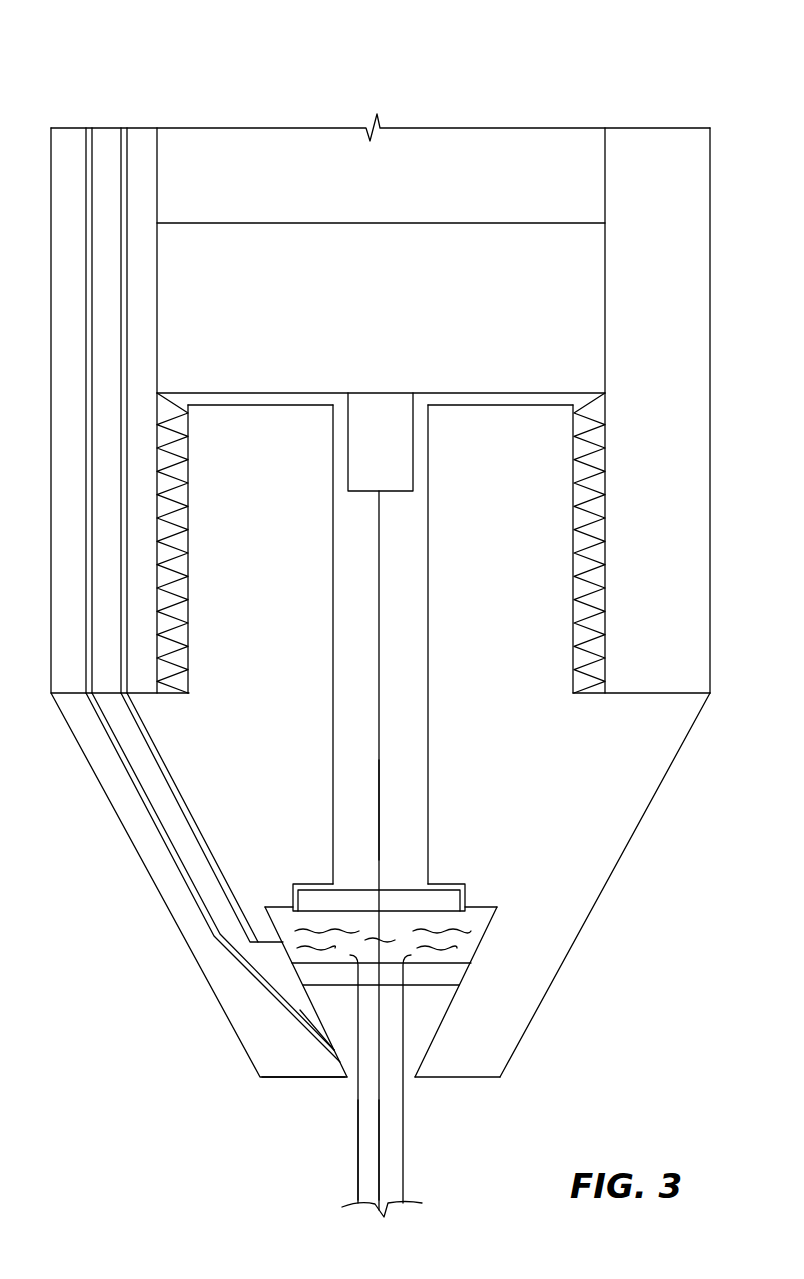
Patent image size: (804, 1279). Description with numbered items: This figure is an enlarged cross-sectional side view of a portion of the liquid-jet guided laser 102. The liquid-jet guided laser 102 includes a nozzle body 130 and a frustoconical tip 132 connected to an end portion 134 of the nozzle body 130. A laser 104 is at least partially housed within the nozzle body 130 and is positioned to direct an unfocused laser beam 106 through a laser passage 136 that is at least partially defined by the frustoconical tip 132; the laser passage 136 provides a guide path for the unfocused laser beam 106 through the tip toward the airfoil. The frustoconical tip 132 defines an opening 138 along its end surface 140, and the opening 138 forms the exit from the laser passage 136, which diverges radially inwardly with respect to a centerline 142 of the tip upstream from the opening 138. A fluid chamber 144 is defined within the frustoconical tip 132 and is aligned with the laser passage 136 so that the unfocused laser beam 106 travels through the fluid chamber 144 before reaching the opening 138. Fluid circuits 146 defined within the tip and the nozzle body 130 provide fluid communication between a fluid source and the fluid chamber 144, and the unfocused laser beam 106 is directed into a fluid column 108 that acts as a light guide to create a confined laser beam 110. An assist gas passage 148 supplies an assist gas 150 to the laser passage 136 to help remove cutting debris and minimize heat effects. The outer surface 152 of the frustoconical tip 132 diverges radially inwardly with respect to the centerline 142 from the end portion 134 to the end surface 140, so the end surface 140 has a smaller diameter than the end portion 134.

The liquid-jet guided laser 102 is at (648, 86).
The laser 104 is at (398, 325).
The unfocused laser beam 106 is at (379, 551).
The fluid column 108 is at (368, 1125).
The confined laser beam 110 is at (380, 1143).
The nozzle body 130 is at (693, 381).
The frustoconical tip 132 is at (632, 812).
The end portion 134 is at (686, 689).
The laser passage 136 is at (403, 654).
The opening 138 is at (414, 1080).
The end surface 140 is at (267, 1084).
The centerline 142 is at (380, 810).
The fluid chamber 144 is at (490, 920).
The fluid circuit 146 is at (127, 208).
The assist gas passage 148 is at (282, 1007).
The assist gas 150 is at (351, 1072).
The outer surface 152 is at (600, 898).